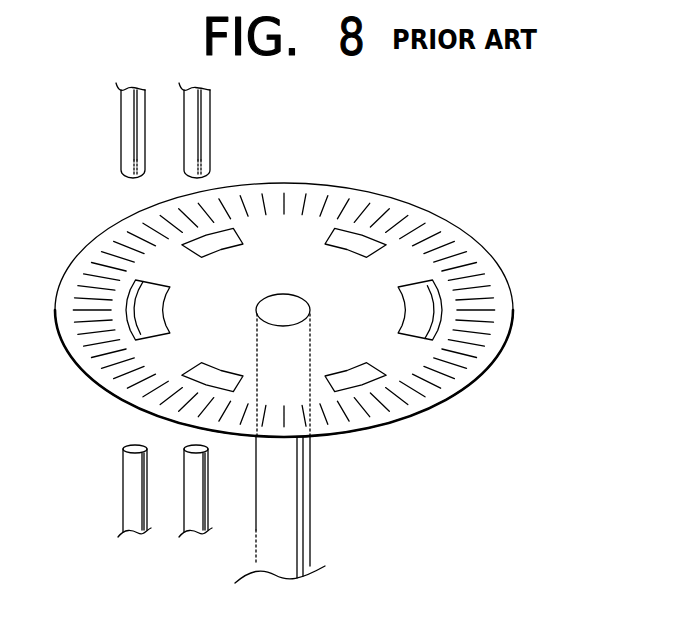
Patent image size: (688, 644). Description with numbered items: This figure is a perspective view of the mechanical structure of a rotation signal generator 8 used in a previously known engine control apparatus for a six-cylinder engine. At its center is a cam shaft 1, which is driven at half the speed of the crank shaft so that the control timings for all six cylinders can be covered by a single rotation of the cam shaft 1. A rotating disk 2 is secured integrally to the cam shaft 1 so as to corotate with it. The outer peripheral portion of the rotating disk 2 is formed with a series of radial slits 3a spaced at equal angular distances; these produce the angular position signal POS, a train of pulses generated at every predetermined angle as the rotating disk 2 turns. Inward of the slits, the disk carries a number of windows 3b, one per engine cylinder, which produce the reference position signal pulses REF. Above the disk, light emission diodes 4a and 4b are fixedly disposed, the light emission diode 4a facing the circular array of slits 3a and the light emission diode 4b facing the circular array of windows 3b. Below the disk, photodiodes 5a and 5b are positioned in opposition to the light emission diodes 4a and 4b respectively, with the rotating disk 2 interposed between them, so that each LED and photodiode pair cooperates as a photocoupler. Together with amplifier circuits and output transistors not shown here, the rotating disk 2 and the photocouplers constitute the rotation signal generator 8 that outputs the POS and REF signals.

The cam shaft 1 is at (312, 497).
The rotating disk 2 is at (495, 266).
The radial slits 3a is at (447, 396).
The windows 3b is at (408, 306).
The light emission diode 4a is at (121, 147).
The light emission diode 4b is at (205, 120).
The photodiode 5a is at (123, 498).
The photodiode 5b is at (208, 497).
The rotation signal generator 8 is at (44, 434).